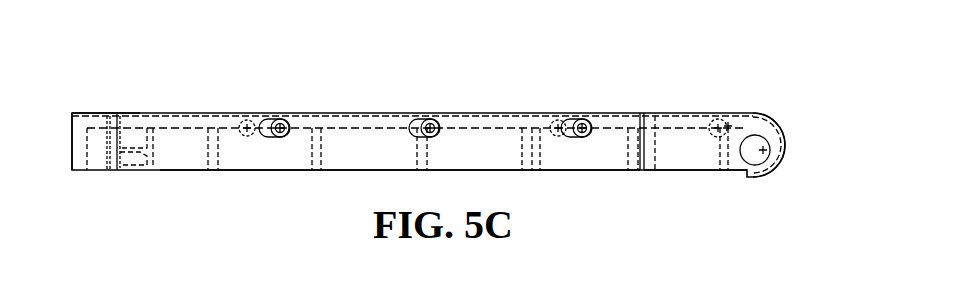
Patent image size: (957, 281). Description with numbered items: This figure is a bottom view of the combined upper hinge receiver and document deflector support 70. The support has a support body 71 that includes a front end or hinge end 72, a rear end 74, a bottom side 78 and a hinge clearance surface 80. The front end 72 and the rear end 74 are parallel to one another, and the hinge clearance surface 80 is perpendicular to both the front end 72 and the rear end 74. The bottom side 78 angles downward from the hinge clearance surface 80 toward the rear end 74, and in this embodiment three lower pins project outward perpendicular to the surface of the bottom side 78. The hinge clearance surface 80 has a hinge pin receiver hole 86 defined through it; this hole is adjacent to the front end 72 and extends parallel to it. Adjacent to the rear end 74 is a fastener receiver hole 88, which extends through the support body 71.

The upper hinge receiver and document deflector support 70 is at (114, 68).
The support body 71 is at (91, 112).
The front end 72 is at (787, 143).
The rear end 74 is at (72, 143).
The bottom side 78 is at (242, 157).
The hinge clearance surface 80 is at (690, 158).
The hinge pin receiver hole 86 is at (752, 155).
The fastener receiver hole 88 is at (131, 119).